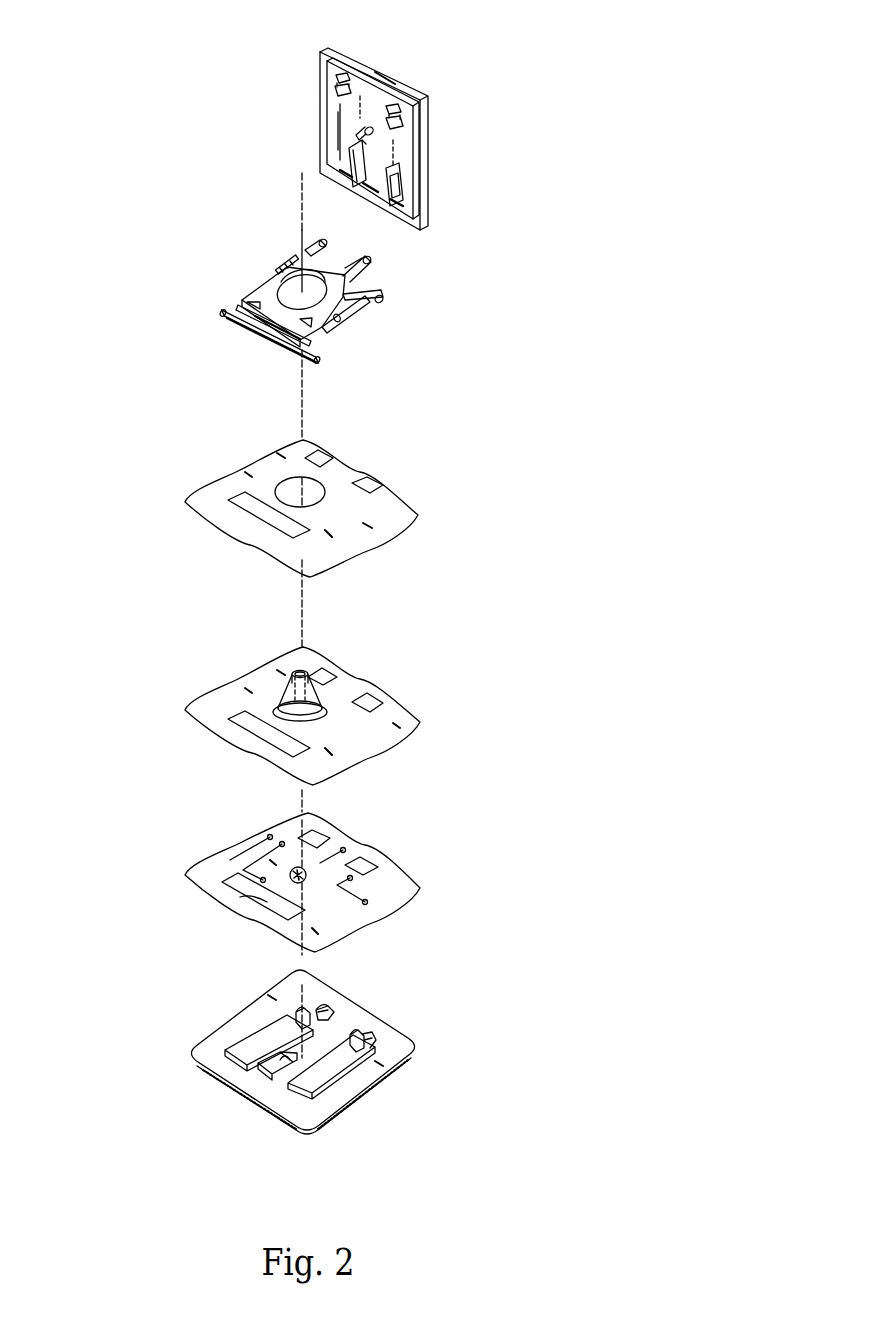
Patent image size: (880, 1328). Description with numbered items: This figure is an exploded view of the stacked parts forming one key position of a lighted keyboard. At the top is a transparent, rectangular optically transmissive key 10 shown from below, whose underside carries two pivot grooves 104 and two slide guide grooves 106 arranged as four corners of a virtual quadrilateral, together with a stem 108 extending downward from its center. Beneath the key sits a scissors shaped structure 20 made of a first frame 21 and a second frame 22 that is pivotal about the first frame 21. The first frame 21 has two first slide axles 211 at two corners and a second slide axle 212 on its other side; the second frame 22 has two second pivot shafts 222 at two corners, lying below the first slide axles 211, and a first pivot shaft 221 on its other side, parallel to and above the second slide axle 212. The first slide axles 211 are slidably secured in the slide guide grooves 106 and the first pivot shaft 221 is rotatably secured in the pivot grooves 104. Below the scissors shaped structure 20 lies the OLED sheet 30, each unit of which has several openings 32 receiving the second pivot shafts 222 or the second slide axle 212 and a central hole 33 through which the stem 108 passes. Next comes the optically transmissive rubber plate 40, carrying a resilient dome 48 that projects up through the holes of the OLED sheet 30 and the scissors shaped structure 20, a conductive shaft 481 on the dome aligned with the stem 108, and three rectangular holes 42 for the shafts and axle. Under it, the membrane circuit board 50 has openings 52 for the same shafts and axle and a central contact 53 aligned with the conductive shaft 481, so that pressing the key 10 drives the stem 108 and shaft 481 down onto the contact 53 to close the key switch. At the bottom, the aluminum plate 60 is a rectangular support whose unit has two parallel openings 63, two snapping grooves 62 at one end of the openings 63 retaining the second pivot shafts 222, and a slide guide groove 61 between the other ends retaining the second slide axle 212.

The optically transmissive key 10 is at (382, 78).
The pivot groove 104 is at (332, 80).
The slide guide groove 106 is at (397, 183).
The stem 108 is at (364, 133).
The scissors shaped structure 20 is at (153, 243).
The first frame 21 is at (288, 262).
The first slide axle 211 is at (368, 259).
The second slide axle 212 is at (257, 332).
The second frame 22 is at (328, 327).
The first pivot shaft 221 is at (252, 295).
The second pivot shaft 222 is at (385, 294).
The OLED sheet 30 is at (295, 520).
The opening 32 is at (318, 456).
The central hole 33 is at (308, 500).
The rubber plate 40 is at (301, 722).
The rectangular hole 42 is at (318, 672).
The resilient dome 48 is at (340, 677).
The conductive shaft 481 is at (298, 702).
The membrane circuit board 50 is at (320, 898).
The opening 52 is at (318, 838).
The central contact 53 is at (306, 884).
The aluminum plate 60 is at (323, 1065).
The slide guide groove 61 is at (262, 1070).
The snapping groove 62 is at (316, 1012).
The opening 63 is at (258, 1040).